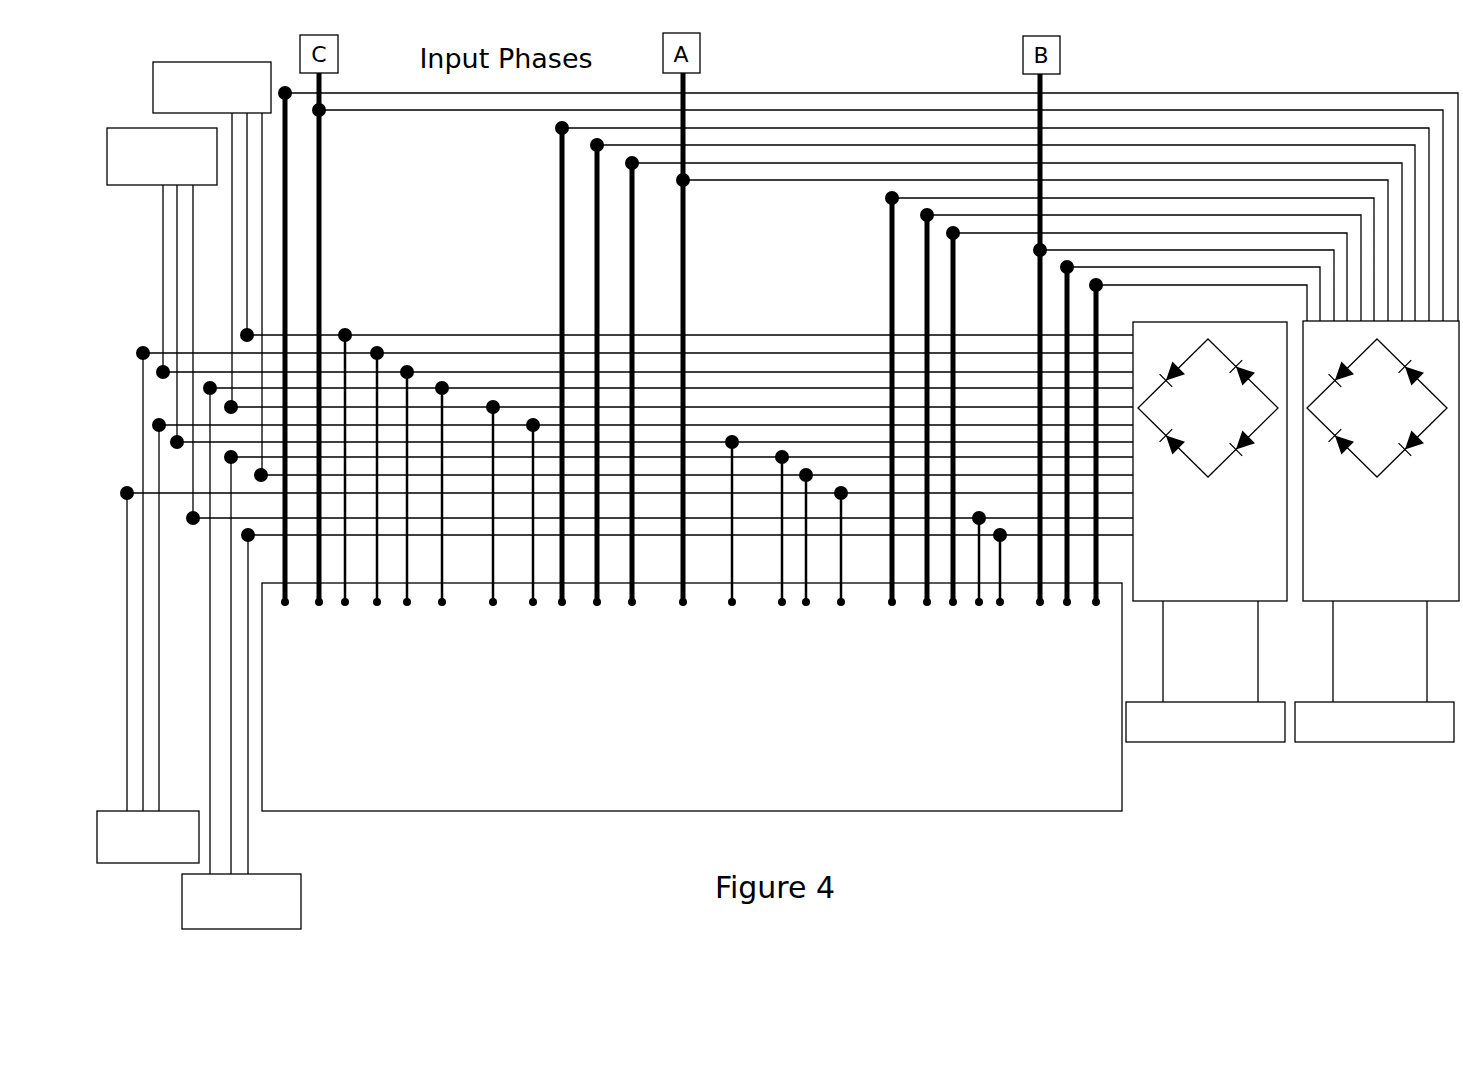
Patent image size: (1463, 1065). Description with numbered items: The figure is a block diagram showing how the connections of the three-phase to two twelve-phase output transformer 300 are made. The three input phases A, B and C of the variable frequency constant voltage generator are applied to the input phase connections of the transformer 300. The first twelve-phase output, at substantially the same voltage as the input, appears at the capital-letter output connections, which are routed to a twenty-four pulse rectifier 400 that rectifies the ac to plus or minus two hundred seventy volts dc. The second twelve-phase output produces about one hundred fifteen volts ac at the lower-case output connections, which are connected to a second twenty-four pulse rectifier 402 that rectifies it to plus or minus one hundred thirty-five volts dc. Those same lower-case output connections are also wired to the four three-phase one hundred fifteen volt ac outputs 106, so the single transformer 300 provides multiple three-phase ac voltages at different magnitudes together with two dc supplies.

The three-phase 115 Vrms ac output 106 is at (152, 67).
The three-phase to two twelve-phase output transformer 300 is at (692, 697).
The 24 pulse rectifier 400 is at (1377, 531).
The 24 pulse rectifier 402 is at (1206, 532).